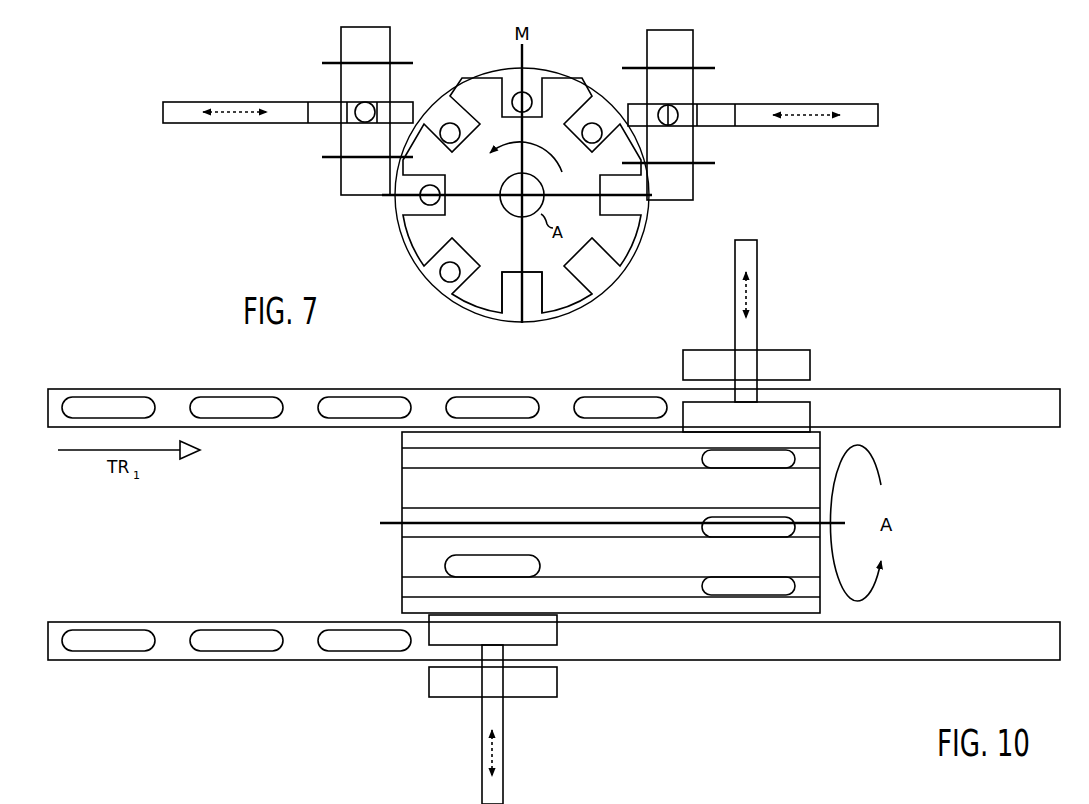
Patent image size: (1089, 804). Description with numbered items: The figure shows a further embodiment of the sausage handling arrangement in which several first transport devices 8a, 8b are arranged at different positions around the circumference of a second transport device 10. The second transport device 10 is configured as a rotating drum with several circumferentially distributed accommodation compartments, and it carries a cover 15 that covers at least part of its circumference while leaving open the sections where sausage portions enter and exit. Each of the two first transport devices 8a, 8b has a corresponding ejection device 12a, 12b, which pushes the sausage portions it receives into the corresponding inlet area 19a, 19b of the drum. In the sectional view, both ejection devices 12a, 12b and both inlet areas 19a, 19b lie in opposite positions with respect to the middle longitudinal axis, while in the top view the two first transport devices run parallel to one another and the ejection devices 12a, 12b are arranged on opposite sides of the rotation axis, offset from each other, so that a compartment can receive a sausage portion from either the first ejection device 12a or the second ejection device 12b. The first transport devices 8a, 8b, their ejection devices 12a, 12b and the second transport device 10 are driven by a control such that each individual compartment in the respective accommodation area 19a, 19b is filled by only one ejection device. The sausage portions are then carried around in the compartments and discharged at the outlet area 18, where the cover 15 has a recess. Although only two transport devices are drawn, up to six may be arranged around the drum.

In FIG. 7, the first transport device 8a is at (647, 38).
In FIG. 7, the first transport device 8b is at (392, 38).
In FIG. 7, the second transport device 10 is at (442, 304).
In FIG. 7, the ejection device 12a is at (775, 102).
In FIG. 10, the ejection device 12a is at (505, 762).
In FIG. 7, the ejection device 12b is at (238, 100).
In FIG. 10, the ejection device 12b is at (758, 291).
In FIG. 7, the cover 15 is at (406, 256).
In FIG. 7, the outlet area 18 is at (532, 304).
In FIG. 7, the inlet area 19a is at (630, 98).
In FIG. 7, the inlet area 19b is at (412, 96).